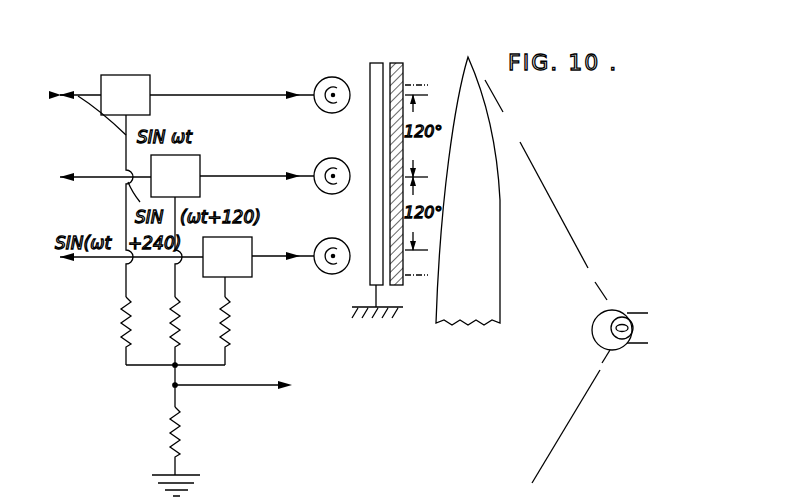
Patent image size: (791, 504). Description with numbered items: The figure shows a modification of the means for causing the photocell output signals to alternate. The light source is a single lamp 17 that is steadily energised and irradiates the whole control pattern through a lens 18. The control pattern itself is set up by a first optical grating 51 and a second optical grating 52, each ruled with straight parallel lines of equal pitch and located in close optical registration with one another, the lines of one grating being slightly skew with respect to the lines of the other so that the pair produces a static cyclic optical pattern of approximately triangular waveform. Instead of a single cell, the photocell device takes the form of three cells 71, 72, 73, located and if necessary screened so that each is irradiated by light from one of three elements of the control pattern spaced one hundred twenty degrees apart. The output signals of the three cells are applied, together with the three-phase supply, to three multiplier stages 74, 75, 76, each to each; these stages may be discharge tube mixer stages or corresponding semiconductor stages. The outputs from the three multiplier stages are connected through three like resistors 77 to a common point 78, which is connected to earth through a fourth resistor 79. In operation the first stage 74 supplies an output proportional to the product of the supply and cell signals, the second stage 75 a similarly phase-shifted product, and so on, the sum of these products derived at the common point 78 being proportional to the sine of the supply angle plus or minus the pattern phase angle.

The lamp 17 is at (592, 324).
The lens 18 is at (468, 191).
The first optical grating 51 is at (404, 77).
The second optical grating 52 is at (370, 75).
The photocell 71 is at (314, 86).
The photocell 72 is at (314, 163).
The photocell 73 is at (319, 243).
The multiplier stage 74 is at (125, 95).
The multiplier stage 75 is at (175, 176).
The multiplier stage 76 is at (227, 257).
The like resistors 77 is at (166, 343).
The common point 78 is at (178, 388).
The fourth resistor 79 is at (186, 424).